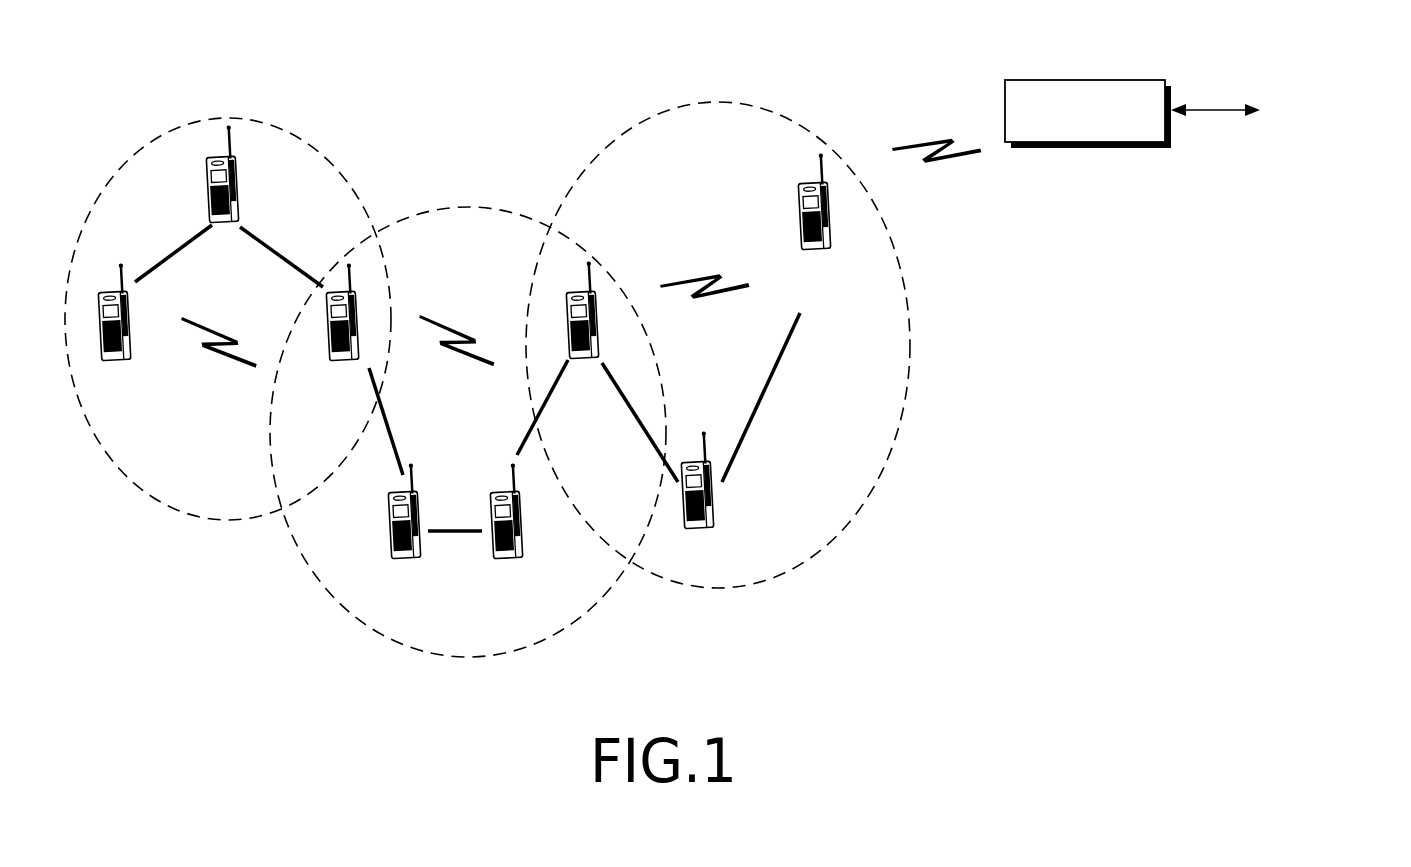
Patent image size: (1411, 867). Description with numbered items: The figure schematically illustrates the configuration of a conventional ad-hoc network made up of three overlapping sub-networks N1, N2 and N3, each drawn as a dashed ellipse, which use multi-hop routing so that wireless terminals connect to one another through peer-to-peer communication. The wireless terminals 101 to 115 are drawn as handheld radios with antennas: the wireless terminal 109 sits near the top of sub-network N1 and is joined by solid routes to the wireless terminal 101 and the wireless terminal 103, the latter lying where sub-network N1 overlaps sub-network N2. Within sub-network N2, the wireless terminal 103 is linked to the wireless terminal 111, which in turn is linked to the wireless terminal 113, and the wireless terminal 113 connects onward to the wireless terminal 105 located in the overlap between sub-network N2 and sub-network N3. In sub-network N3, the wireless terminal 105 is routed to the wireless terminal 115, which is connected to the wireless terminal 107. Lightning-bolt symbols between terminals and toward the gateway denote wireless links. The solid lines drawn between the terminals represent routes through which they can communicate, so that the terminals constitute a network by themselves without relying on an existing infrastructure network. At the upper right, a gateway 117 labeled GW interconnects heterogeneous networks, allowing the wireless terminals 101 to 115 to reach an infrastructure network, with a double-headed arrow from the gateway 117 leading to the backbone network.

The wireless terminal 101 is at (114, 364).
The wireless terminal 103 is at (342, 364).
The wireless terminal 105 is at (582, 362).
The wireless terminal 107 is at (814, 251).
The wireless terminal 109 is at (240, 188).
The wireless terminal 111 is at (404, 562).
The wireless terminal 113 is at (506, 562).
The wireless terminal 115 is at (697, 530).
The gateway 117 is at (1083, 80).
The sub-network N1 is at (227, 118).
The sub-network N2 is at (468, 207).
The sub-network N3 is at (714, 102).